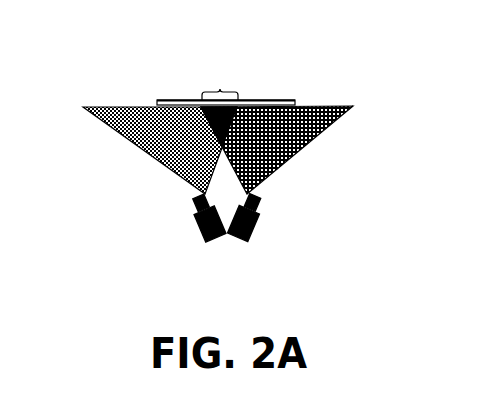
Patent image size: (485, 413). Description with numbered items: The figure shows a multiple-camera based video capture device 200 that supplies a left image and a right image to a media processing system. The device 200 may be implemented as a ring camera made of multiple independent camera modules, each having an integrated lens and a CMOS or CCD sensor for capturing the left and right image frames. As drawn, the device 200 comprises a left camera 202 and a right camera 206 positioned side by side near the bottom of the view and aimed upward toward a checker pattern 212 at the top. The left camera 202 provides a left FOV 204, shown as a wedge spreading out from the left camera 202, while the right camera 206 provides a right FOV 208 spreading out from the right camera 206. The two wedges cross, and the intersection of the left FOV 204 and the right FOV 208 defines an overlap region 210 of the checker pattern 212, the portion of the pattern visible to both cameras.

The multiple-camera based video capture device 200 is at (244, 23).
The left camera 202 is at (200, 227).
The left FOV 204 is at (139, 109).
The right camera 206 is at (258, 227).
The right FOV 208 is at (299, 110).
The overlap region 210 is at (223, 87).
The checker pattern 212 is at (179, 97).